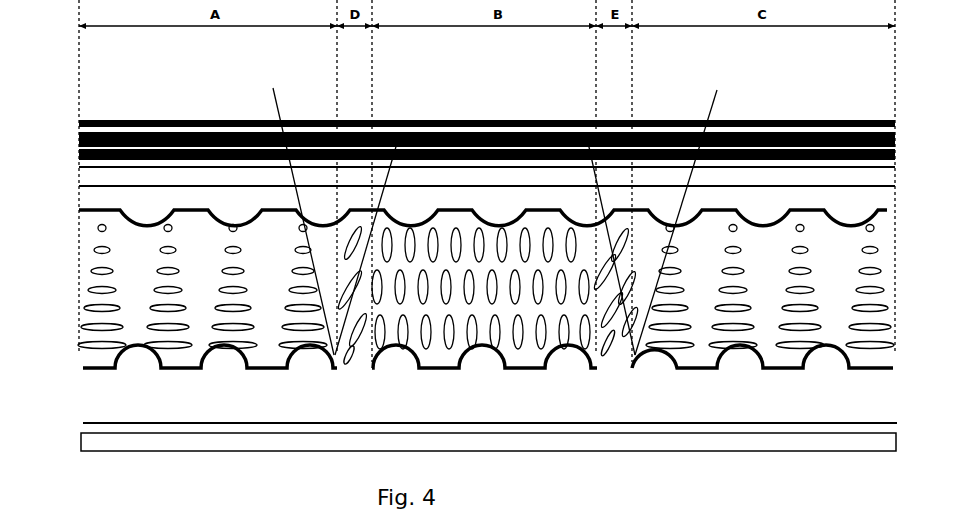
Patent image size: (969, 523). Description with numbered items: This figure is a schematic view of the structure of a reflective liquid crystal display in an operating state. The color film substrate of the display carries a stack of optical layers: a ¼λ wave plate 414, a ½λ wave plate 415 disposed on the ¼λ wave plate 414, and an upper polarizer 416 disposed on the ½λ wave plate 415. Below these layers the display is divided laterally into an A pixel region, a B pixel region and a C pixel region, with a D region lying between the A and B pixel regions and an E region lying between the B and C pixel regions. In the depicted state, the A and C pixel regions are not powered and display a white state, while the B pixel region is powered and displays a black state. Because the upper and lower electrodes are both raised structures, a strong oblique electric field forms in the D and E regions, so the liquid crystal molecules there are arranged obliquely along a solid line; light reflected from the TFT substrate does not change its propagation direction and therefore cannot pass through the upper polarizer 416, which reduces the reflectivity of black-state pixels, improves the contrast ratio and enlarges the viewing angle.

The ¼λ wave plate 414 is at (79, 162).
The ½λ wave plate 415 is at (79, 140).
The upper polarizer 416 is at (82, 127).